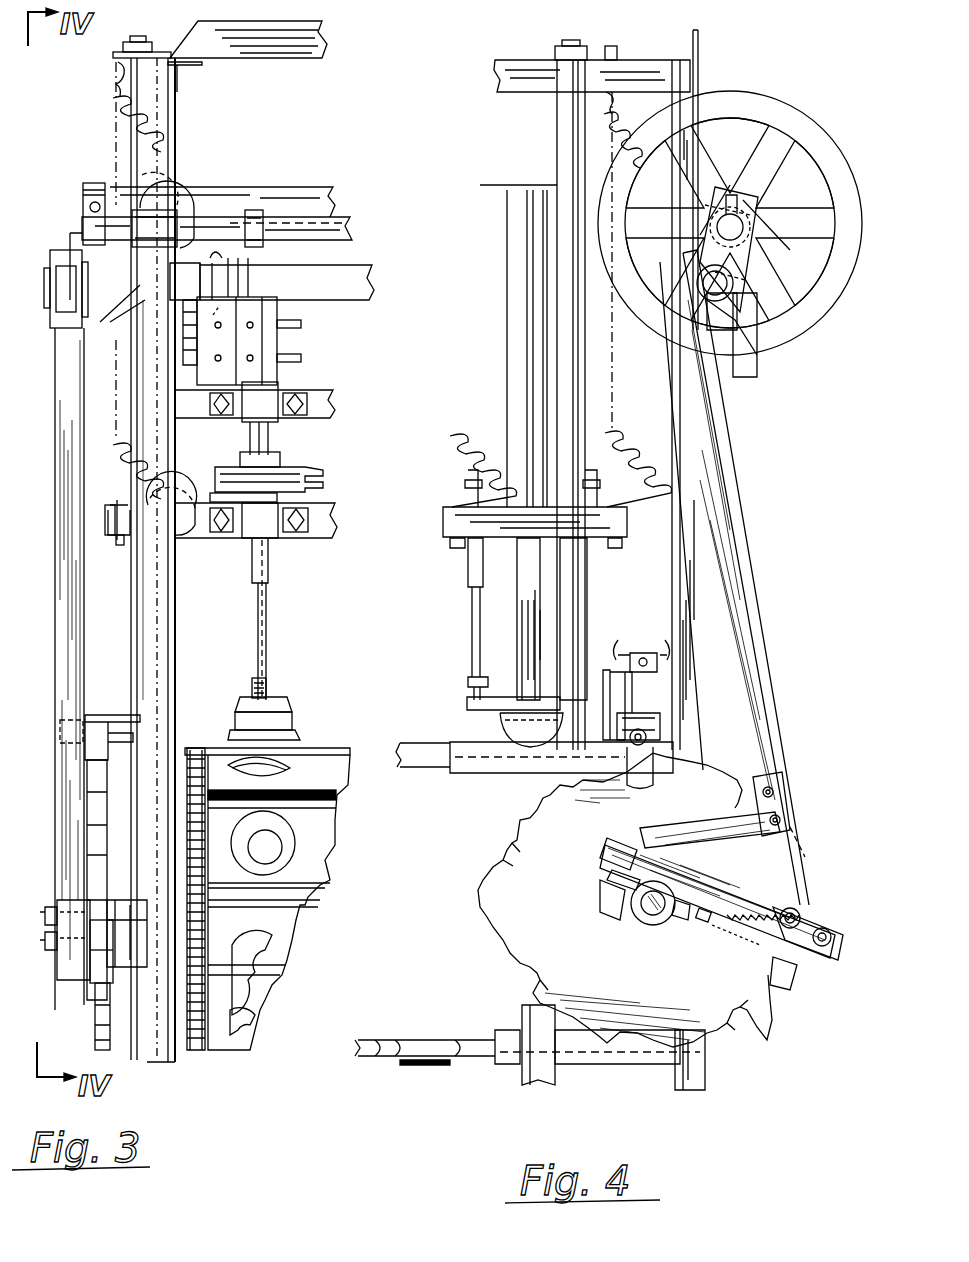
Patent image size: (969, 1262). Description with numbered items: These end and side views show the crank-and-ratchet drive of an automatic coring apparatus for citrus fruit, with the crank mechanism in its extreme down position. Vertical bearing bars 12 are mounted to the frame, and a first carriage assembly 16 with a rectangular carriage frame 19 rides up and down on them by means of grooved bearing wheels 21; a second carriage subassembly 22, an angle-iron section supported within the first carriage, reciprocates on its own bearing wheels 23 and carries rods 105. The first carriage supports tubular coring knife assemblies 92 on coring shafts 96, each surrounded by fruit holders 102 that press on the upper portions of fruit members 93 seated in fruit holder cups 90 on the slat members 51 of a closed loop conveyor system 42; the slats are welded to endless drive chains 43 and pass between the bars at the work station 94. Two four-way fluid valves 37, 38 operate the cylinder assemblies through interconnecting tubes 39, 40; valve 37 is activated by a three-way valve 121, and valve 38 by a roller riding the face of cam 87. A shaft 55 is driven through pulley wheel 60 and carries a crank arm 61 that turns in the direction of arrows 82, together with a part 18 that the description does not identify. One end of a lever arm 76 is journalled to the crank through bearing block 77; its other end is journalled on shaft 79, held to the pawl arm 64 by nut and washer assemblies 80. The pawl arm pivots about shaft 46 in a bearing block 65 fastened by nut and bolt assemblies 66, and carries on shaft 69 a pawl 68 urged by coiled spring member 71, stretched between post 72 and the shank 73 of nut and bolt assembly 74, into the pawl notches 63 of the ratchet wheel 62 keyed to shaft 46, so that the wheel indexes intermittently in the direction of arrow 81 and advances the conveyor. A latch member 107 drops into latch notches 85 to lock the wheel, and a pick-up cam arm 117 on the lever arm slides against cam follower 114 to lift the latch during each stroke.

In FIG. 3, the bearing bars 12 is at (131, 660).
In FIG. 3, the first carriage assembly 16 is at (318, 185).
In FIG. 4, the pivot bracket 18 is at (760, 355).
In FIG. 3, the carriage frame 19 is at (340, 525).
In FIG. 3, the bearing wheels 21 is at (165, 205).
In FIG. 3, the second carriage subassembly 22 is at (372, 272).
In FIG. 3, the bearing wheels 23 is at (110, 323).
In FIG. 3, the four-way fluid valve 37 is at (237, 341).
In FIG. 3, the four-way fluid valve 38 is at (223, 332).
In FIG. 3, the interconnecting tubes 39 is at (248, 318).
In FIG. 3, the interconnecting tubes 40 is at (290, 357).
In FIG. 3, the conveyor system 42 is at (312, 885).
In FIG. 4, the endless drive chains 43 is at (368, 1058).
In FIG. 3, the shaft 46 is at (135, 940).
In FIG. 4, the shaft 46 is at (655, 915).
In FIG. 3, the slat members 51 is at (330, 800).
In FIG. 3, the shaft 55 is at (330, 228).
In FIG. 4, the shaft 55 is at (742, 212).
In FIG. 4, the pulley wheel 60 is at (850, 318).
In FIG. 3, the crank arm 61 is at (92, 245).
In FIG. 4, the crank arm 61 is at (745, 255).
In FIG. 3, the ratchet wheel 62 is at (95, 1008).
In FIG. 4, the ratchet wheel 62 is at (625, 900).
In FIG. 4, the pawl receiving notches 63 is at (740, 1005).
In FIG. 4, the pawl arm 64 is at (700, 848).
In FIG. 4, the bearing block 65 is at (630, 895).
In FIG. 4, the nut and bolt assemblies 66 is at (612, 875).
In FIG. 3, the pawl 68 is at (92, 973).
In FIG. 4, the pawl 68 is at (790, 988).
In FIG. 4, the shaft 69 is at (830, 930).
In FIG. 4, the coiled spring member 71 is at (738, 942).
In FIG. 4, the post 72 is at (815, 960).
In FIG. 4, the shank 73 is at (715, 925).
In FIG. 4, the nut and bolt assembly 74 is at (735, 905).
In FIG. 3, the lever arm 76 is at (55, 655).
In FIG. 4, the lever arm 76 is at (740, 572).
In FIG. 4, the bearing block 77 is at (718, 372).
In FIG. 4, the shaft 79 is at (800, 912).
In FIG. 4, the nut and washer assemblies 80 is at (765, 945).
In FIG. 4, the arrow 81 is at (565, 880).
In FIG. 4, the arrows 82 is at (790, 92).
In FIG. 4, the latch notches 85 is at (490, 855).
In FIG. 3, the cam 87 is at (255, 215).
In FIG. 3, the fruit holder cups 90 is at (295, 765).
In FIG. 3, the coring knife assemblies 92 is at (270, 619).
In FIG. 4, the coring knife assemblies 92 is at (548, 592).
In FIG. 3, the fruit members 93 is at (292, 722).
In FIG. 3, the work station 94 is at (228, 735).
In FIG. 3, the coring shaft 96 is at (272, 440).
In FIG. 4, the coring shaft 96 is at (498, 718).
In FIG. 3, the fruit holders 102 is at (280, 705).
In FIG. 4, the rods 105 is at (530, 625).
In FIG. 4, the latch member 107 is at (640, 780).
In FIG. 4, the cam follower 114 is at (650, 733).
In FIG. 4, the pick-up cam arm 117 is at (690, 830).
In FIG. 4, the three-way valve 121 is at (648, 655).